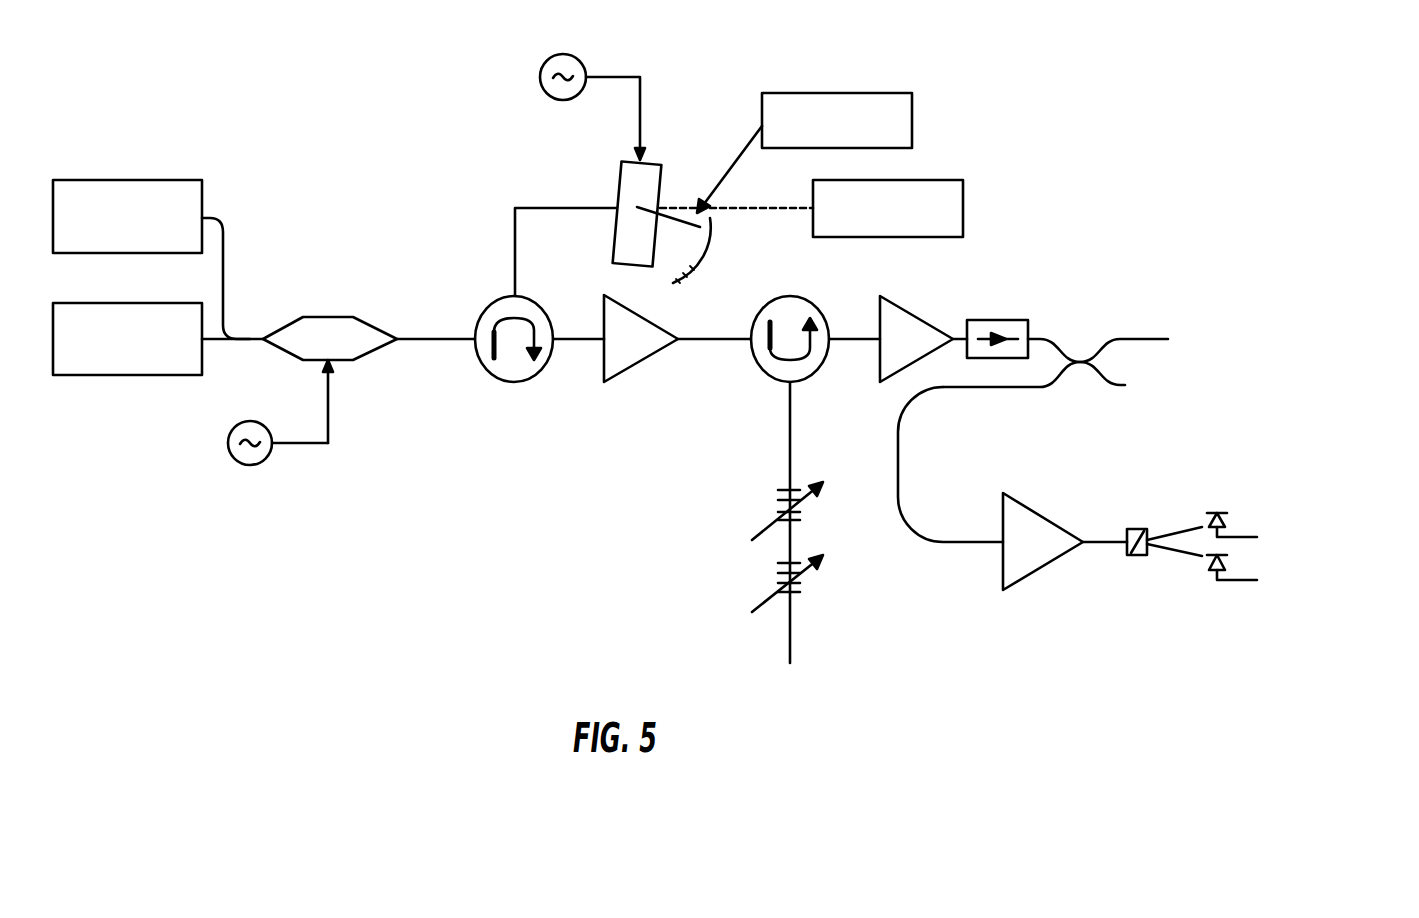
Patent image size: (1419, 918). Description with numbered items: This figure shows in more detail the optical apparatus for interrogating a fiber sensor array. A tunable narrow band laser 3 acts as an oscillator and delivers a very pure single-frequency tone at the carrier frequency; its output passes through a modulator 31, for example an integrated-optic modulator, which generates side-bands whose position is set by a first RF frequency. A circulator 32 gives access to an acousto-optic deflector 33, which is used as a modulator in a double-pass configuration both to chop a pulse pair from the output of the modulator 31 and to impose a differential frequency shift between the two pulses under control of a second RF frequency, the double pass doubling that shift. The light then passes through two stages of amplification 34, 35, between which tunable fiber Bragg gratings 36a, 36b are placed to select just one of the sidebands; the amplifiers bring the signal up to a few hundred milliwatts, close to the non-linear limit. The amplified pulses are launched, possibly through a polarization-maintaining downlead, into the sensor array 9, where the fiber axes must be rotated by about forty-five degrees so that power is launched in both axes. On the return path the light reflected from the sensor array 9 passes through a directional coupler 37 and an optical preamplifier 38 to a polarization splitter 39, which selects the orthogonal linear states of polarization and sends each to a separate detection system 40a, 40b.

The narrow band laser 3 is at (80, 180).
The sensor array 9 is at (1285, 352).
The modulator 31 is at (317, 317).
The circulator 32 is at (513, 383).
The acousto-optic deflector 33 is at (648, 163).
The amplification stage 34 is at (636, 366).
The amplification stage 35 is at (908, 308).
The tunable fiber Bragg grating 36a is at (778, 520).
The tunable fiber Bragg grating 36b is at (778, 592).
The directional coupler 37 is at (1083, 366).
The optical preamplifier 38 is at (1042, 567).
The polarization splitter 39 is at (1139, 529).
The detection system 40a is at (1228, 521).
The detection system 40b is at (1228, 565).